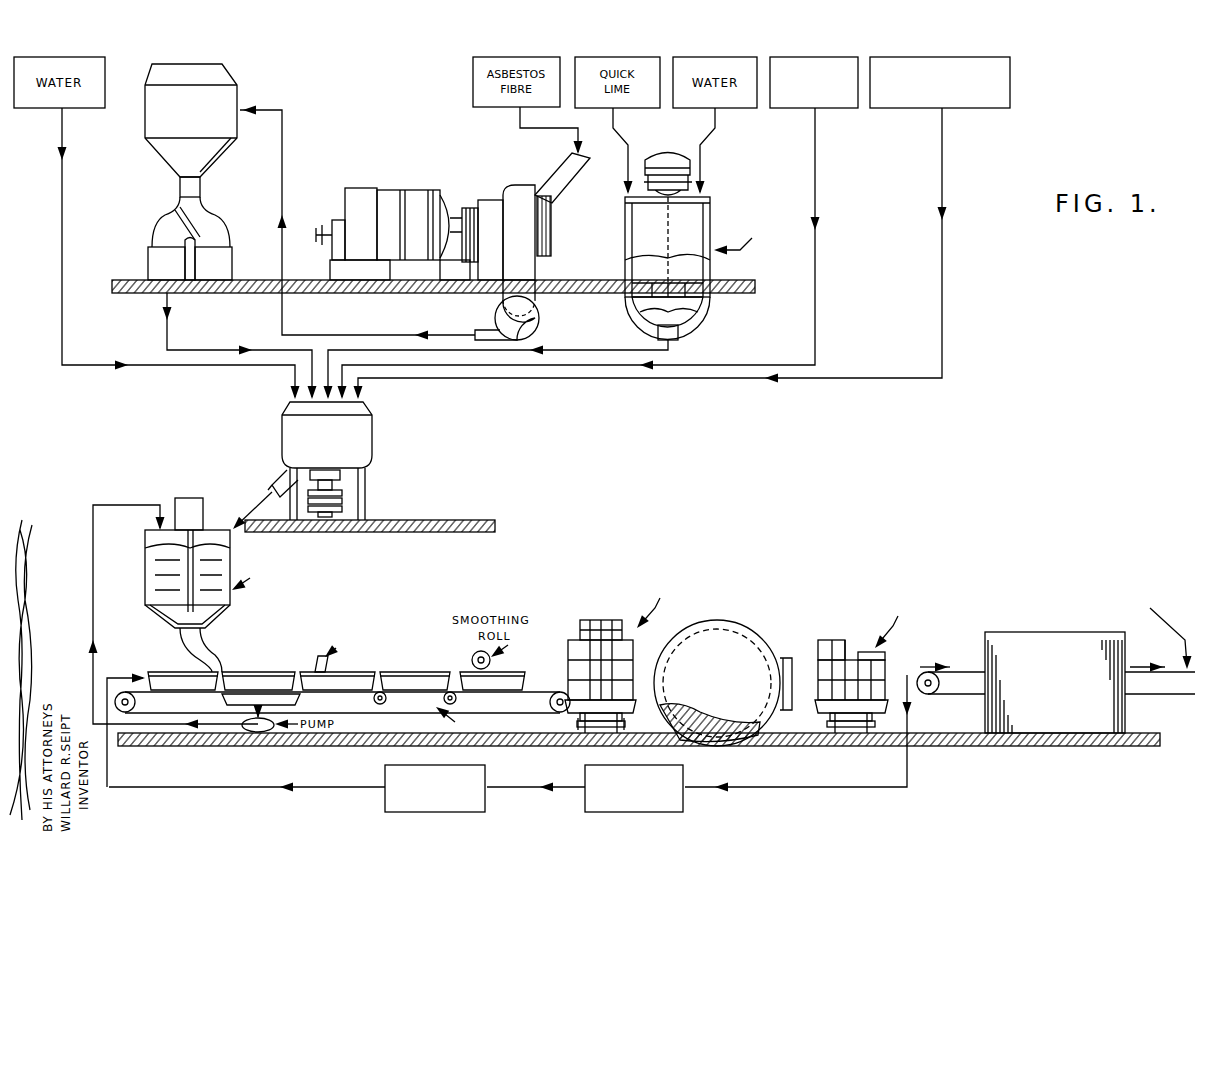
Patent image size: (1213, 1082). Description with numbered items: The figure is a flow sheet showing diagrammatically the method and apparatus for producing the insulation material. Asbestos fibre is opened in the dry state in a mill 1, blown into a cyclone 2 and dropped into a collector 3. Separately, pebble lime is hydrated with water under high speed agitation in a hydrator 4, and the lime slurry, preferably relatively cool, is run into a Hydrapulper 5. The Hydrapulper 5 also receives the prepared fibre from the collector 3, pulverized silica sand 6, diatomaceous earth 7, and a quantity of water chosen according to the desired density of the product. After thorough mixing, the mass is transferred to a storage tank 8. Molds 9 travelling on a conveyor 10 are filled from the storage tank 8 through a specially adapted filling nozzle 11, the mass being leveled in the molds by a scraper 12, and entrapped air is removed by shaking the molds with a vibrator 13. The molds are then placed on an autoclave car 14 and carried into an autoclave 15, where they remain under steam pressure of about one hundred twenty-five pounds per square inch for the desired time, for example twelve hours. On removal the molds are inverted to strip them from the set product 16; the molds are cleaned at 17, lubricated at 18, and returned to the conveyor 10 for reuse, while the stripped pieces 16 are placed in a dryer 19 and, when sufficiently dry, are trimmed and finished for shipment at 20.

The mill 1 is at (355, 200).
The cyclone 2 is at (188, 75).
The collector 3 is at (162, 226).
The hydrator 4 is at (638, 232).
The Hydrapulper 5 is at (372, 428).
The pulverized silica sand 6 is at (838, 104).
The diatomaceous earth 7 is at (1000, 97).
The storage tank 8 is at (155, 548).
The molds 9 is at (163, 672).
The conveyor 10 is at (360, 710).
The filling nozzle 11 is at (205, 652).
The scraper 12 is at (318, 656).
The vibrator 13 is at (455, 704).
The autoclave car 14 is at (625, 708).
The autoclave 15 is at (716, 638).
The set product 16 is at (825, 645).
The mold cleaning station 17 is at (683, 805).
The mold lubricating station 18 is at (385, 800).
The dryer 19 is at (998, 636).
The trimming and finishing station 20 is at (1178, 670).